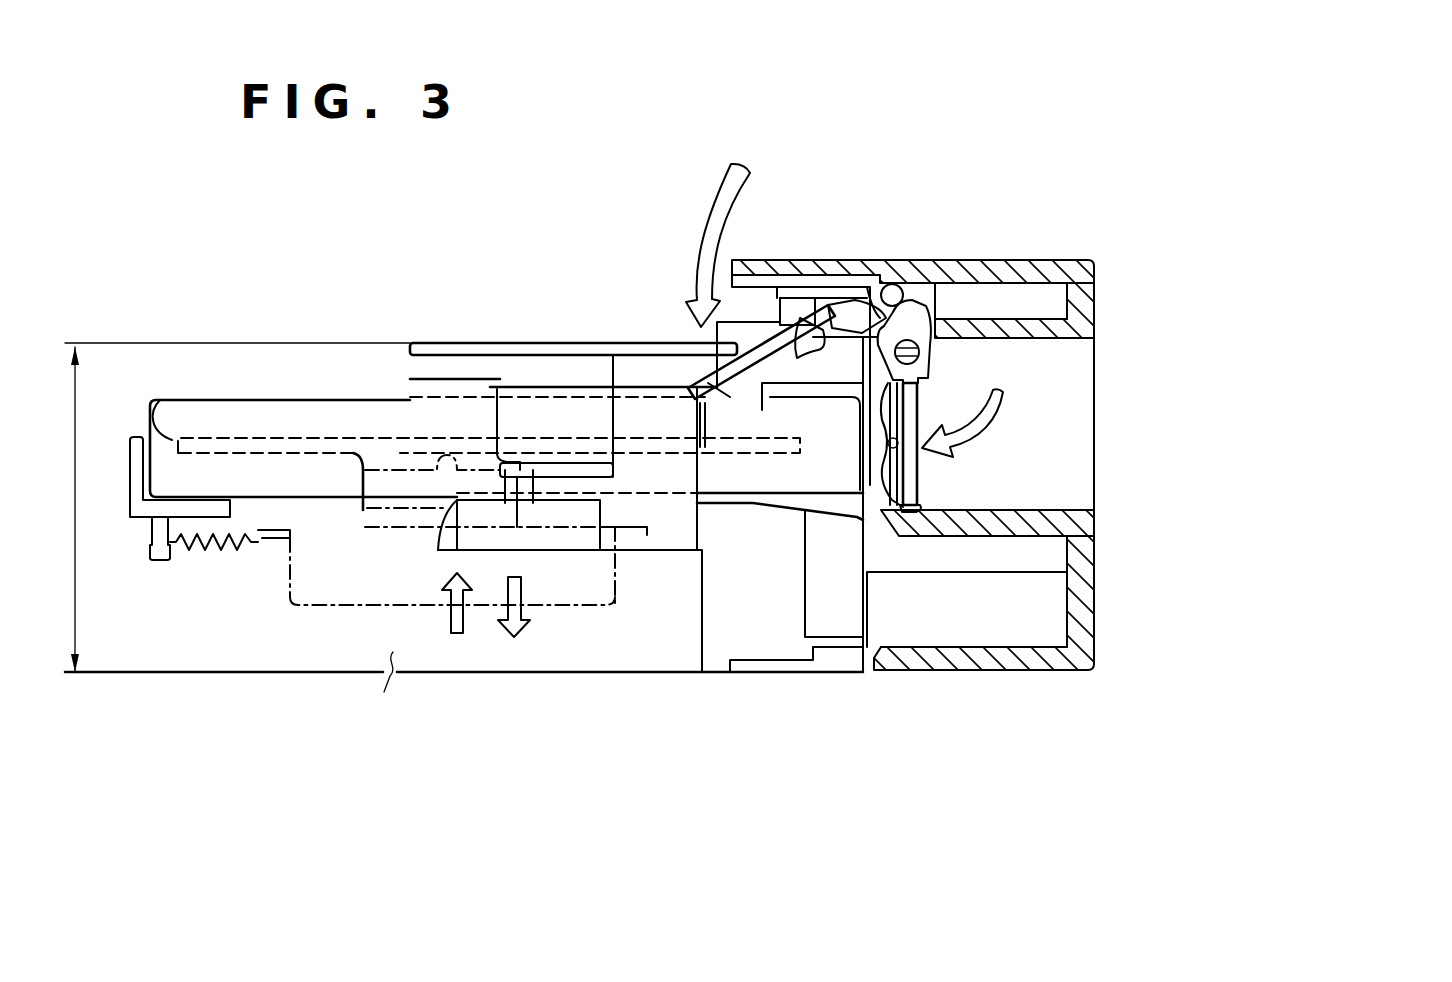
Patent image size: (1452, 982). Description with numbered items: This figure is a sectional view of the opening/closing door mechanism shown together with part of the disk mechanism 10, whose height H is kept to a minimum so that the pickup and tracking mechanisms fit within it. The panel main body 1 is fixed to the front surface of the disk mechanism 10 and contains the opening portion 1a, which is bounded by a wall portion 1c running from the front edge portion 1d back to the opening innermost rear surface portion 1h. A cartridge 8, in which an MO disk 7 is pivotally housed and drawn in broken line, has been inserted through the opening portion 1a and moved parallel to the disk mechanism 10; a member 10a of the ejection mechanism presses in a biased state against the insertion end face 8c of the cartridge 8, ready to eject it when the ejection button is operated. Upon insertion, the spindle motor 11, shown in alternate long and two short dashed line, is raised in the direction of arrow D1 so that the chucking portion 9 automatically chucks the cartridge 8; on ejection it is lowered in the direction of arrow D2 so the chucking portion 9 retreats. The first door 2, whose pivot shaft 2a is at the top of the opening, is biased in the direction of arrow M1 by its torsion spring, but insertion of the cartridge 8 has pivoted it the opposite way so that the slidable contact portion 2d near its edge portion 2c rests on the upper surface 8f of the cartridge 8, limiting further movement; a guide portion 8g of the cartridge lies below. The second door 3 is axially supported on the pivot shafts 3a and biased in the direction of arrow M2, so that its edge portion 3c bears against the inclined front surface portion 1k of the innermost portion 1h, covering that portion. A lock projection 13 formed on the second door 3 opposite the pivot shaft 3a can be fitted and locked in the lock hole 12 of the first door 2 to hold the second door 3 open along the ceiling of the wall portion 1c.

The panel main body 1 is at (1011, 257).
The opening portion 1a is at (1046, 430).
The wall portion 1c is at (1045, 320).
The front edge portion 1d is at (1094, 505).
The opening innermost rear surface portion 1h is at (852, 517).
The inclined front surface portion 1k is at (895, 512).
The first door 2 is at (793, 360).
The pivot shaft of first door 2a is at (880, 262).
The edge portion of the first door 2c is at (672, 398).
The slidable contact portion 2d is at (728, 400).
The second door 3 is at (925, 403).
The pivot shaft 3a is at (931, 308).
The edge portion of the second door 3c is at (908, 507).
The MO disk 7 is at (278, 445).
The cartridge 8 is at (362, 397).
The insertion end face 8c is at (160, 400).
The upper surface of the cartridge 8f is at (245, 400).
The cartridge guide portion 8g is at (858, 437).
The chucking portion 9 is at (363, 522).
The disk mechanism 10 is at (643, 378).
The member constituting an ejection mechanism 10a is at (128, 500).
The spindle motor 11 is at (360, 607).
The lock hole 12 is at (818, 322).
The lock projection 13 is at (915, 300).
The bias direction of the first door M1 is at (708, 238).
The bias direction of the second door M2 is at (1003, 408).
The raising direction of the spindle motor D1 is at (452, 615).
The lowering direction of the spindle motor D2 is at (520, 604).
The height of the disk mechanism H is at (75, 530).